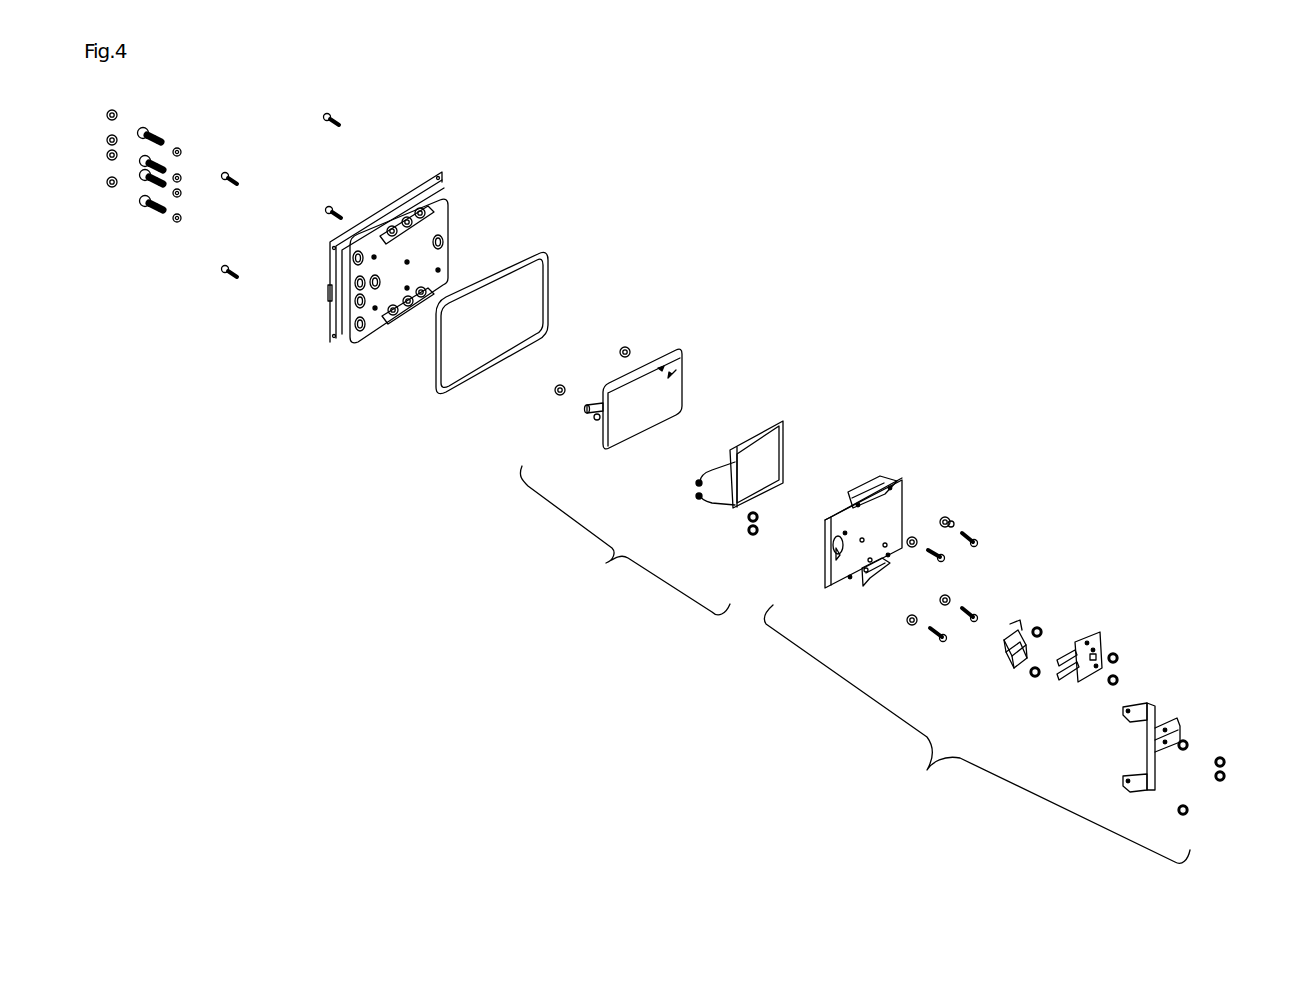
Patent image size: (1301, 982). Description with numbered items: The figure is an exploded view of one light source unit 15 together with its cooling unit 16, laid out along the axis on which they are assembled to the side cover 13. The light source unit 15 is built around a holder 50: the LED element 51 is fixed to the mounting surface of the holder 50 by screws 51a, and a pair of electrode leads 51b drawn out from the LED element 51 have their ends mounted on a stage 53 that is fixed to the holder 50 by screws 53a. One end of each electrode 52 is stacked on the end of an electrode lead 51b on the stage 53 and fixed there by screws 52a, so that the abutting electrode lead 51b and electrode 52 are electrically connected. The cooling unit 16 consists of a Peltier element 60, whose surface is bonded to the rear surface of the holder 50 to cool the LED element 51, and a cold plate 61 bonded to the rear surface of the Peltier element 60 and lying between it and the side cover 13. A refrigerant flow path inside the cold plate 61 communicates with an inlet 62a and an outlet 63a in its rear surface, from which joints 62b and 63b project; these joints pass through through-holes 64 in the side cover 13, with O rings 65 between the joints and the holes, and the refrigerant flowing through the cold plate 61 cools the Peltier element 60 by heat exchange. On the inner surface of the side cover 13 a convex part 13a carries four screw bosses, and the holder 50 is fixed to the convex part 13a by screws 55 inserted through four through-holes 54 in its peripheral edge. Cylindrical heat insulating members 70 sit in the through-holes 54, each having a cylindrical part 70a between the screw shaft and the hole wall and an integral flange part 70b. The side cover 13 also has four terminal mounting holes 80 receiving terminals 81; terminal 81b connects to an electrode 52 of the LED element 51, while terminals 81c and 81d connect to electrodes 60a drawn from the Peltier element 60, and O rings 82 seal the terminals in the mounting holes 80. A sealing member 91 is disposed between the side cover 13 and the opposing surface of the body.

The side cover 13 is at (394, 267).
The convex part 13a is at (452, 203).
The light source unit 15 is at (977, 734).
The cooling unit 16 is at (625, 540).
The holder 50 is at (879, 528).
The LED element 51 is at (1107, 664).
The screws 51a is at (1118, 658).
The electrode leads 51b is at (1062, 656).
The electrodes 52 is at (1197, 747).
The screws 52a is at (1225, 758).
The stage 53 is at (403, 224).
The screws 53a is at (1040, 628).
The through-holes 54 is at (858, 490).
The screws 55 is at (944, 560).
The Peltier element 60 is at (752, 466).
The electrodes 60a is at (700, 478).
The cold plate 61 is at (662, 384).
The inlet 62a is at (682, 372).
The joint 62b is at (661, 366).
The outlet 63a is at (595, 421).
The joint 63b is at (592, 403).
The through-holes 64 is at (446, 244).
The O rings 65 is at (622, 346).
The heat insulating member 70 is at (979, 557).
The cylindrical part 70a is at (950, 520).
The flange part 70b is at (990, 514).
The terminal mounting holes 80 is at (352, 234).
The terminal 81 is at (152, 128).
The terminal 81b is at (148, 210).
The terminal 81c is at (182, 150).
The terminal 81d is at (184, 196).
The O rings 82 is at (182, 180).
The sealing member 91 is at (438, 392).